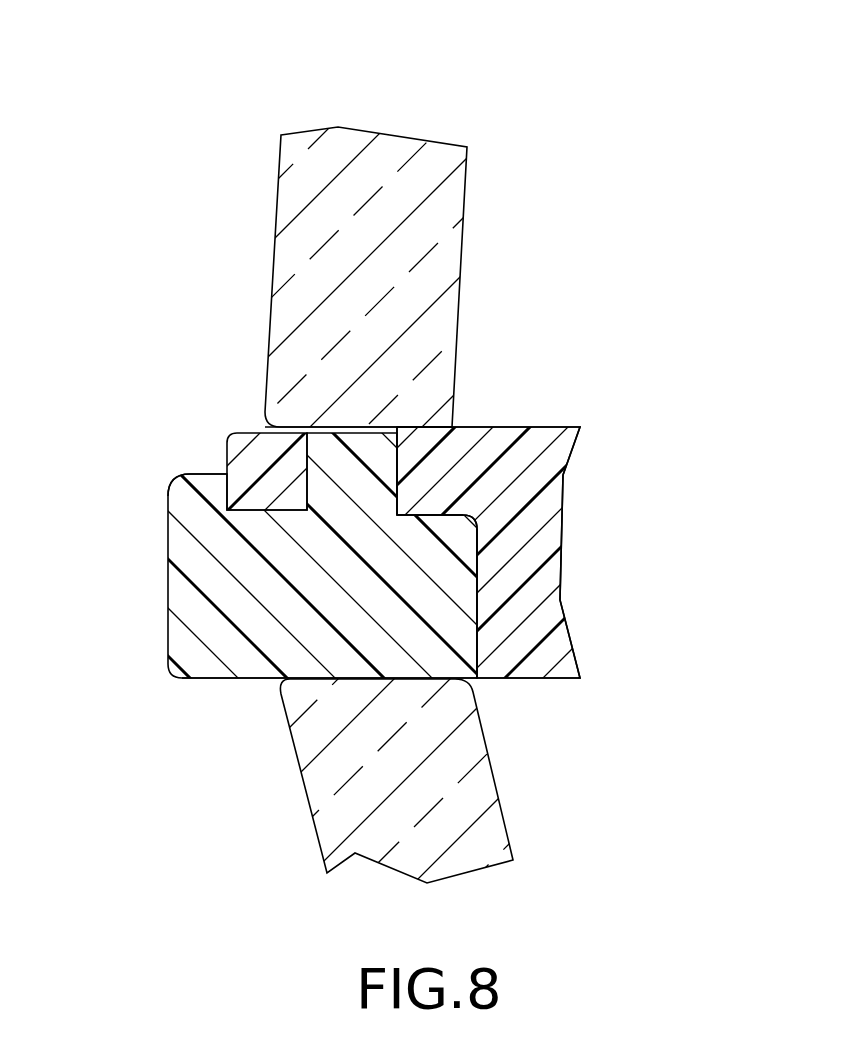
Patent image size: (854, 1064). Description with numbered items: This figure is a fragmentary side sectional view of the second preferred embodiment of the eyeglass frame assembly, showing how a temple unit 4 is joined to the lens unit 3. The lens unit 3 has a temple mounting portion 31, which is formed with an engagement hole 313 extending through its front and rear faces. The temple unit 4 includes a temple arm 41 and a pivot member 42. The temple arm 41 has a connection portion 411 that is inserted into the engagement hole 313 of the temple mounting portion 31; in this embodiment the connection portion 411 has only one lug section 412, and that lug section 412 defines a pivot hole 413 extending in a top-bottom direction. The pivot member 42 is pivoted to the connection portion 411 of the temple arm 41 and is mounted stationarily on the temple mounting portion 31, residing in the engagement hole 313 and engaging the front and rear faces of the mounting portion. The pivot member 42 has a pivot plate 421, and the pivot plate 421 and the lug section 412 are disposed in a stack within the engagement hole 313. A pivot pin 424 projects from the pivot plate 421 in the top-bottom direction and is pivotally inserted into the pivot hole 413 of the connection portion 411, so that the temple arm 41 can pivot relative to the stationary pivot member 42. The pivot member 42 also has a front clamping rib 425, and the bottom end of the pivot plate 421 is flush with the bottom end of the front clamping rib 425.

The lens unit 3 is at (364, 446).
The temple mounting portion 31 is at (253, 252).
The engagement hole 313 is at (405, 423).
The temple unit 4 is at (419, 581).
The temple arm 41 is at (496, 588).
The connection portion 411 is at (528, 598).
The lug section 412 is at (427, 487).
The pivot hole 413 is at (423, 468).
The pivot member 42 is at (343, 581).
The pivot plate 421 is at (303, 613).
The pivot pin 424 is at (330, 460).
The front clamping rib 425 is at (187, 510).